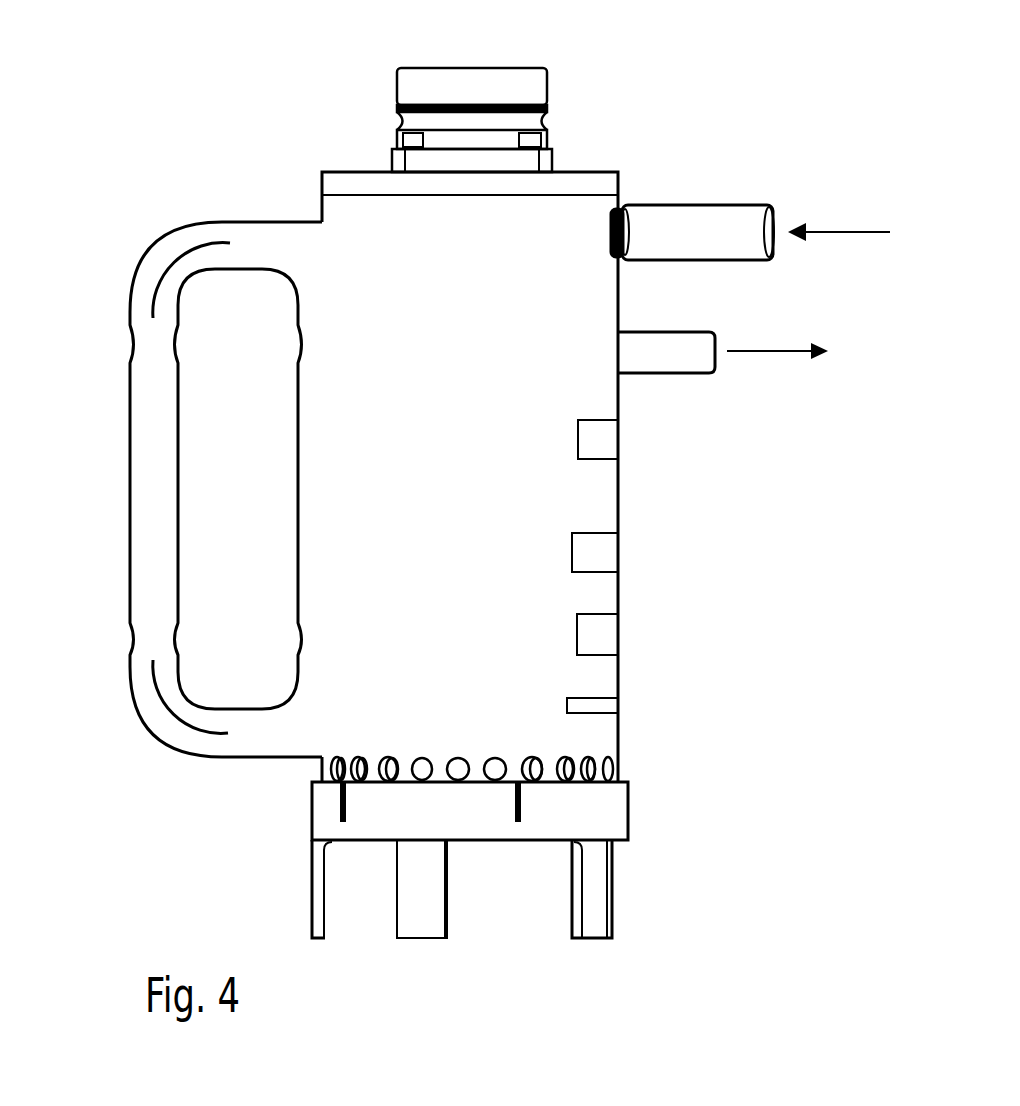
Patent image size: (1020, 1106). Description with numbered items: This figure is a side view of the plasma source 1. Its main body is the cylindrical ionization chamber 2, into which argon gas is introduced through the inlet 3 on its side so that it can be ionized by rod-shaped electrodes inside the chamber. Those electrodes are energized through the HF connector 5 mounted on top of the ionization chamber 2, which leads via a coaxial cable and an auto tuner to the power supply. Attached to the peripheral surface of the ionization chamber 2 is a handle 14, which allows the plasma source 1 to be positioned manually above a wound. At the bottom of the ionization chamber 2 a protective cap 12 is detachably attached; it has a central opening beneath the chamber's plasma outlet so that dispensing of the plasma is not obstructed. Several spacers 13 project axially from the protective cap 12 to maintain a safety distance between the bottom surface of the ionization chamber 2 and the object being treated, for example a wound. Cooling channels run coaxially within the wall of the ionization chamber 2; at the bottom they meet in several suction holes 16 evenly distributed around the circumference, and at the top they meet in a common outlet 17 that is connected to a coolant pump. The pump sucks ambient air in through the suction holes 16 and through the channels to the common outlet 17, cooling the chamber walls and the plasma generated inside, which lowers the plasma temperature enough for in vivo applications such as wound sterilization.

The plasma source 1 is at (248, 146).
The ionization chamber 2 is at (537, 475).
The inlet 3 is at (686, 222).
The HF connector 5 is at (480, 88).
The protective cap 12 is at (612, 808).
The spacers 13 is at (318, 908).
The handle 14 is at (152, 437).
The suction holes 16 is at (590, 748).
The common outlet 17 is at (638, 352).